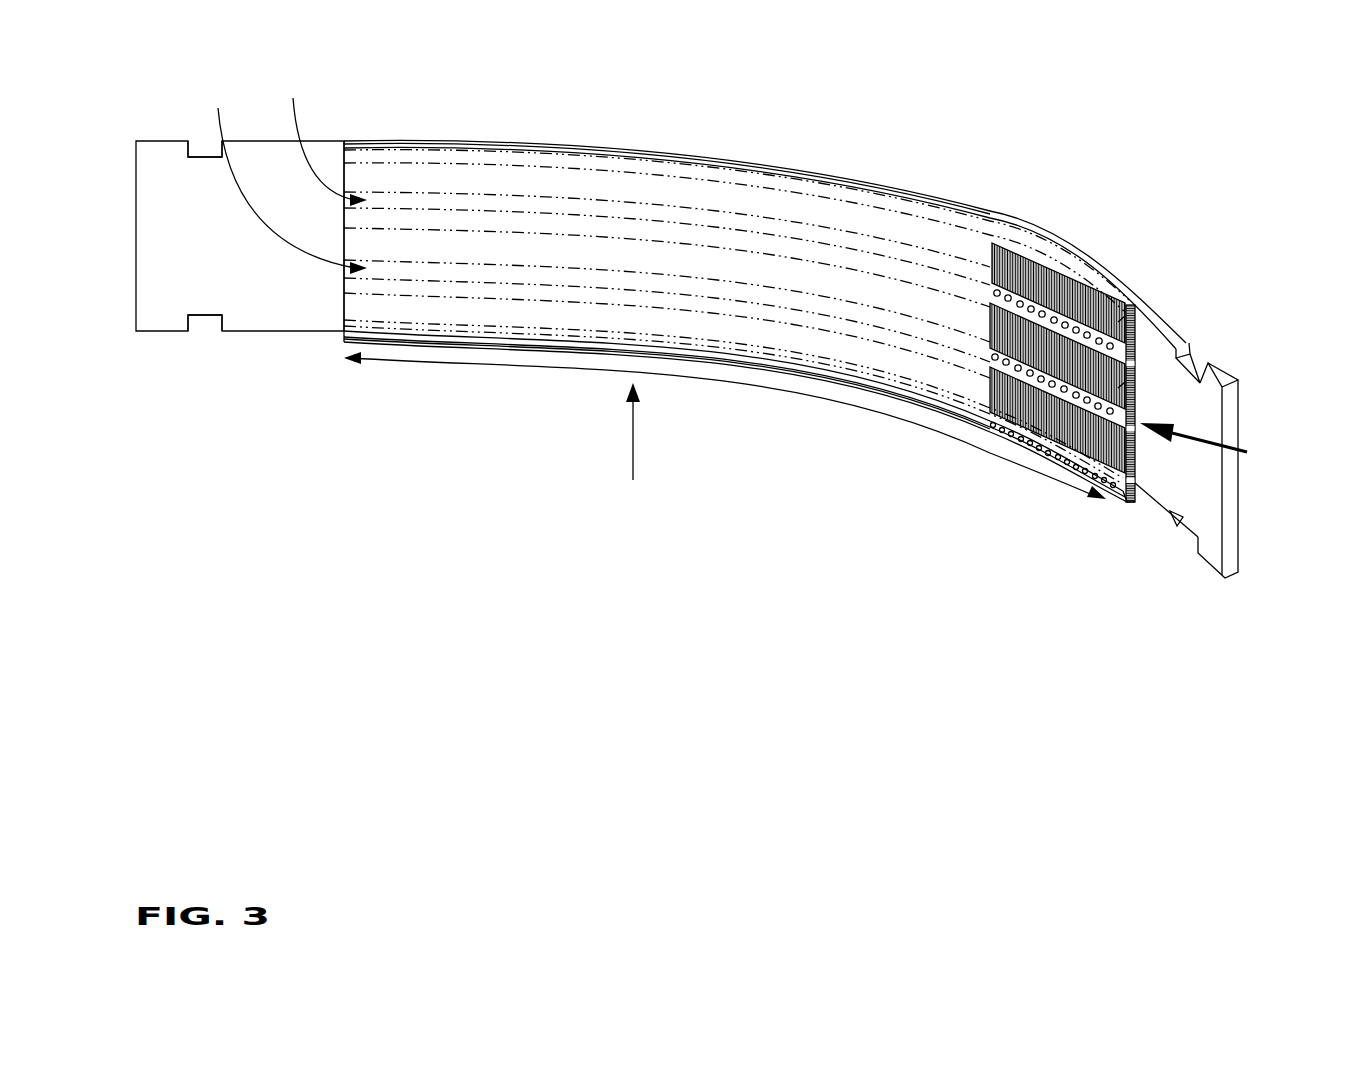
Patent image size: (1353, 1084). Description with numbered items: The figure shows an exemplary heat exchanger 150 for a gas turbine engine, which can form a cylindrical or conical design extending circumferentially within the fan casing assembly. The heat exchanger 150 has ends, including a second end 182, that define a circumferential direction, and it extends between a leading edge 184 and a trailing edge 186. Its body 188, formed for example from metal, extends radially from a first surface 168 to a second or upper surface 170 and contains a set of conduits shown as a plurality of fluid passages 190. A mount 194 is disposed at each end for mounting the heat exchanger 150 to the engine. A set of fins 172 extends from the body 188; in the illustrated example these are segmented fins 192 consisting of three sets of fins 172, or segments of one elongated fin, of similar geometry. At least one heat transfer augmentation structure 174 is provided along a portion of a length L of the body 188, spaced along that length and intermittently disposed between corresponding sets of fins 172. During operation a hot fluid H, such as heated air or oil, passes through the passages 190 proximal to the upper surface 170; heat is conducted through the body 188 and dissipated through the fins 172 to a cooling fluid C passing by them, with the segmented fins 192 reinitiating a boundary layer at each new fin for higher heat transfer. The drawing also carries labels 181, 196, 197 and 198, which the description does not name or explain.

The heat exchanger 150 is at (897, 192).
The first surface 168 is at (1137, 476).
The second surface 170 is at (1008, 240).
The set of fins 172 is at (1135, 310).
The heat transfer augmentation structure 174 is at (1067, 258).
The end plate 181 is at (1240, 478).
The second end 182 is at (136, 300).
The leading edge 184 is at (800, 378).
The trailing edge 186 is at (565, 143).
The body 188 is at (1130, 304).
The fluid passages 190 is at (1135, 332).
The segmented fins 192 is at (680, 212).
The mount 194 is at (267, 308).
The edge 196 is at (1126, 503).
The inlet flow 197 is at (283, 177).
The inlet flow 198 is at (320, 138).
The hot fluid H is at (1212, 435).
The cooling fluid C is at (631, 451).
The length L is at (862, 412).